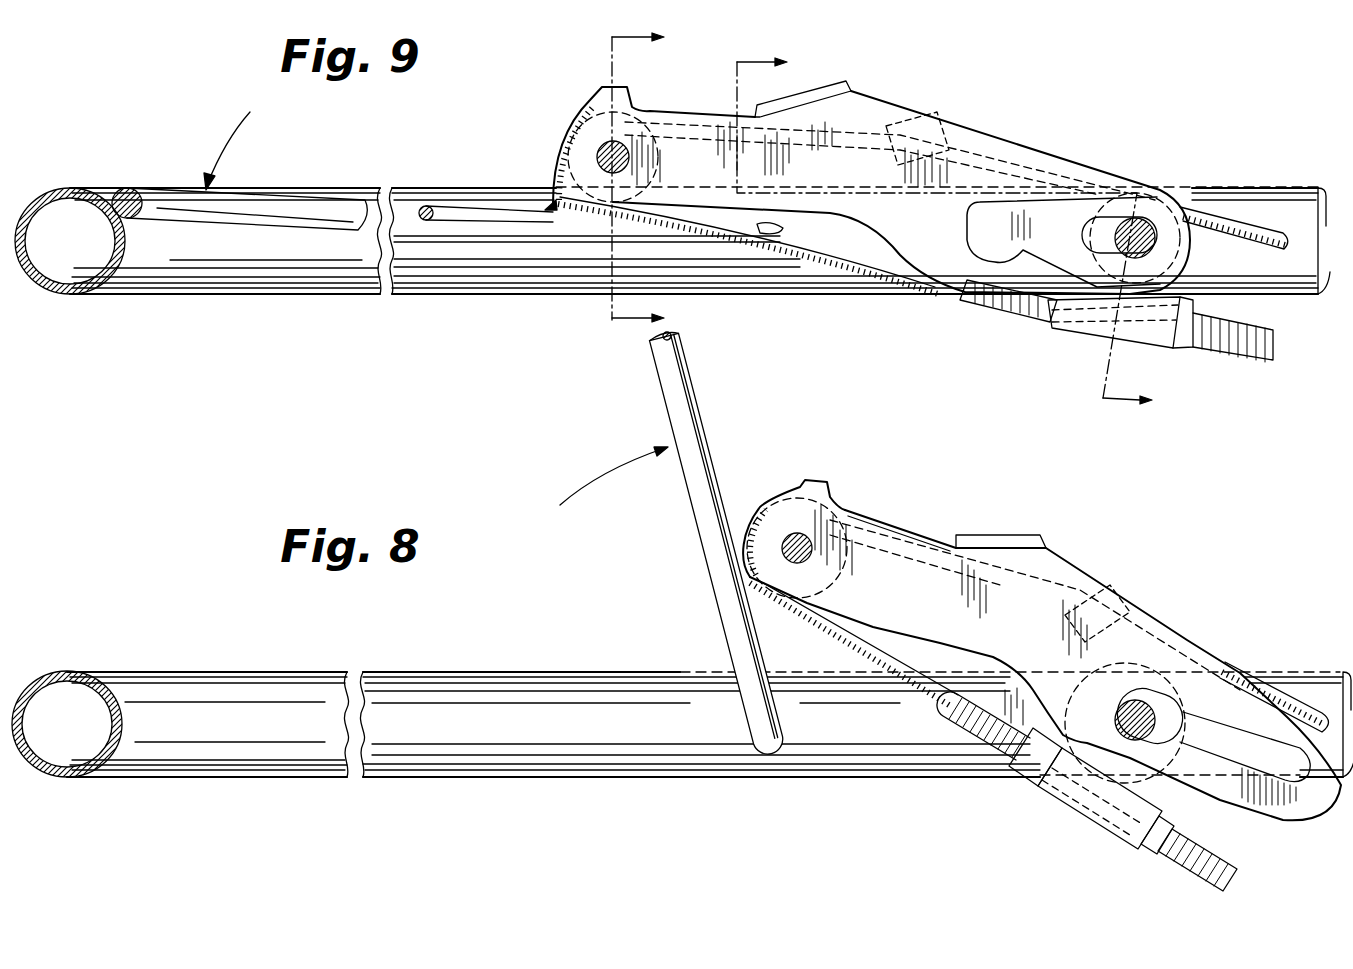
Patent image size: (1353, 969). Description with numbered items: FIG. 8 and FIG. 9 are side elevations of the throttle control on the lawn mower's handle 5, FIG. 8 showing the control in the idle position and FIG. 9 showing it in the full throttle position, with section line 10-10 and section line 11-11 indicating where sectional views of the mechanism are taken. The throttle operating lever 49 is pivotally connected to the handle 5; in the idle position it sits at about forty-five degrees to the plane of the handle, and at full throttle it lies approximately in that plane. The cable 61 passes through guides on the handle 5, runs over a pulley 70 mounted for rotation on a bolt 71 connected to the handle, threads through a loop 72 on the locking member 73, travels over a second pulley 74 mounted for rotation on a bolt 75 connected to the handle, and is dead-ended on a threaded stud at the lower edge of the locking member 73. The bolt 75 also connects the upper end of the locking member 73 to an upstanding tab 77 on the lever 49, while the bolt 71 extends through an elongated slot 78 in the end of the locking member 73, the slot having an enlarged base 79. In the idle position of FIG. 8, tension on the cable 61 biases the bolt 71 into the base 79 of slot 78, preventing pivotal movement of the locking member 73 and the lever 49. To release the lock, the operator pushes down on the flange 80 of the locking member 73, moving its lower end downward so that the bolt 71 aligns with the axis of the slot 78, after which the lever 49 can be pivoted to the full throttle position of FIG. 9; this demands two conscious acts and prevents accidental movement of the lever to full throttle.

In FIG. 9, the handle 5 is at (278, 285).
In FIG. 8, the handle 5 is at (205, 672).
In FIG. 9, the section line 10- 10 is at (654, 179).
In FIG. 9, the section line 11- 11 is at (958, 232).
In FIG. 9, the throttle operating lever 49 is at (290, 200).
In FIG. 8, the throttle operating lever 49 is at (692, 372).
In FIG. 9, the cable 61 is at (872, 265).
In FIG. 8, the cable 61 is at (920, 690).
In FIG. 9, the pulley 70 is at (1080, 225).
In FIG. 8, the pulley 70 is at (1182, 722).
In FIG. 9, the bolt 71 is at (1136, 222).
In FIG. 8, the bolt 71 is at (1136, 710).
In FIG. 9, the loop 72 is at (905, 108).
In FIG. 8, the loop 72 is at (1100, 583).
In FIG. 9, the locking member 73 is at (882, 221).
In FIG. 8, the locking member 73 is at (1015, 660).
In FIG. 9, the pulley 74 is at (640, 120).
In FIG. 8, the pulley 74 is at (870, 522).
In FIG. 9, the bolt 75 is at (605, 148).
In FIG. 8, the bolt 75 is at (782, 548).
In FIG. 9, the upstanding tab 77 is at (553, 195).
In FIG. 8, the upstanding tab 77 is at (735, 505).
In FIG. 9, the elongated slot 78 is at (1017, 205).
In FIG. 8, the elongated slot 78 is at (1262, 696).
In FIG. 9, the enlarged base 79 is at (988, 262).
In FIG. 8, the enlarged base 79 is at (1102, 782).
In FIG. 9, the flange 80 is at (845, 83).
In FIG. 8, the flange 80 is at (1016, 535).